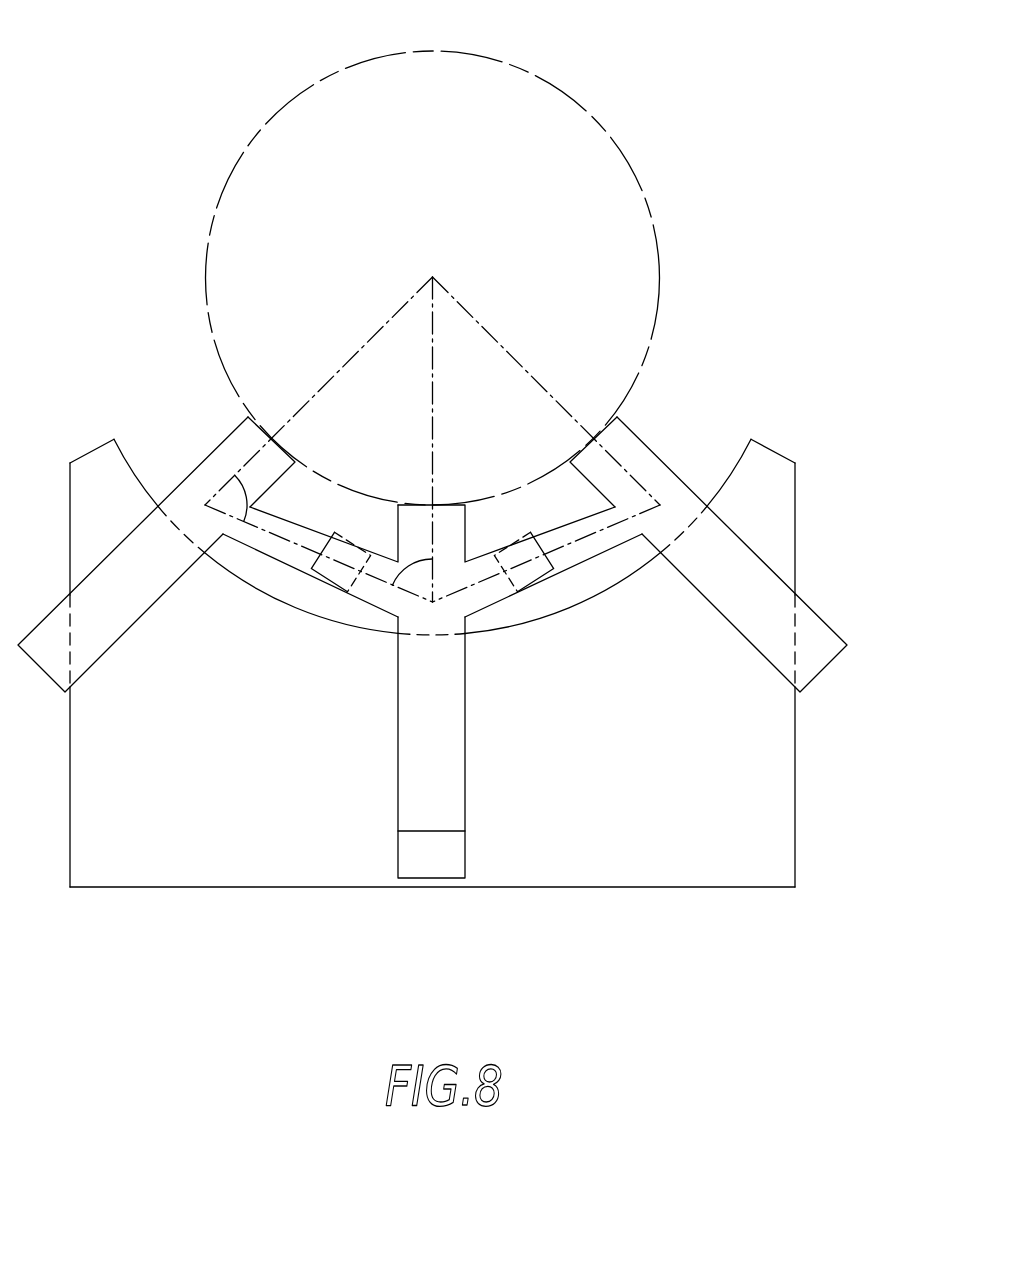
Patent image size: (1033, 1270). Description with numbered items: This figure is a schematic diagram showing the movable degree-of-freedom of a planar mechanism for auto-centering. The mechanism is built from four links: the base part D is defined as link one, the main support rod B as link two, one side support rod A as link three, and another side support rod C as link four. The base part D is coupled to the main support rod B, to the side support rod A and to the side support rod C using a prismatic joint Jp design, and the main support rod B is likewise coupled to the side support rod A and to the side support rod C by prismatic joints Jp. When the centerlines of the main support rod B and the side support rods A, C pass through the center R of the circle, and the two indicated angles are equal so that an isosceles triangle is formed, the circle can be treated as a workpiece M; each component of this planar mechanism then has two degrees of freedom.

The workpiece M is at (608, 125).
The center of the circle R is at (432, 422).
The side support rod C is at (237, 457).
The side support rod A is at (620, 457).
The main support rod B is at (451, 533).
The base part D is at (305, 865).
The prismatic joint Jp is at (332, 567).